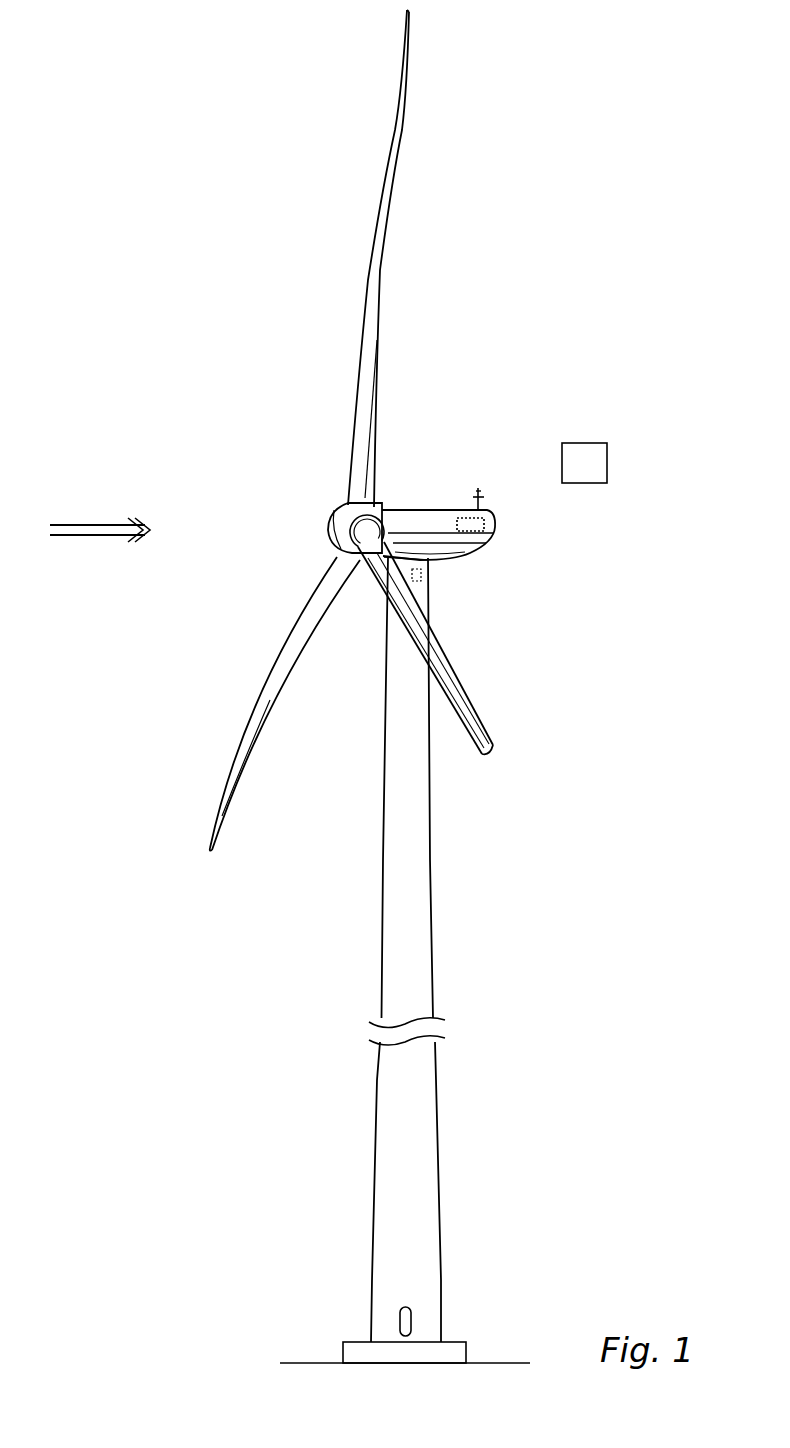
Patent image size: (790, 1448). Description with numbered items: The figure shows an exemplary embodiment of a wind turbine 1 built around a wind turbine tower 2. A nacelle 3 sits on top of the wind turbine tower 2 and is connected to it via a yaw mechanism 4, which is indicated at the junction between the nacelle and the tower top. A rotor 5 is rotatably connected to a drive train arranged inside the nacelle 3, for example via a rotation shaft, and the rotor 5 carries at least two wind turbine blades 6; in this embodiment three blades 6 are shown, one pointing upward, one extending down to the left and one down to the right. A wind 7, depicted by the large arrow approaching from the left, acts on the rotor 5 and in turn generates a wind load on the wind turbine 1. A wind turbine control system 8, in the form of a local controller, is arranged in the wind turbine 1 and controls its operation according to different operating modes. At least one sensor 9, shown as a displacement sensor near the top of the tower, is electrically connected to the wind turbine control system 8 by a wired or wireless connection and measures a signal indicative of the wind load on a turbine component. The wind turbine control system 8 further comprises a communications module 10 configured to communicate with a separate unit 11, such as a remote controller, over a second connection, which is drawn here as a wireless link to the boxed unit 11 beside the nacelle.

The wind turbine 1 is at (163, 425).
The wind turbine tower 2 is at (420, 968).
The nacelle 3 is at (396, 518).
The yaw mechanism 4 is at (432, 567).
The rotor 5 is at (296, 512).
The wind turbine blades 6 is at (376, 265).
The wind 7 is at (90, 537).
The wind turbine control system 8 is at (496, 527).
The sensor 9 is at (414, 581).
The communications module 10 is at (470, 524).
The separate unit 11 is at (507, 513).